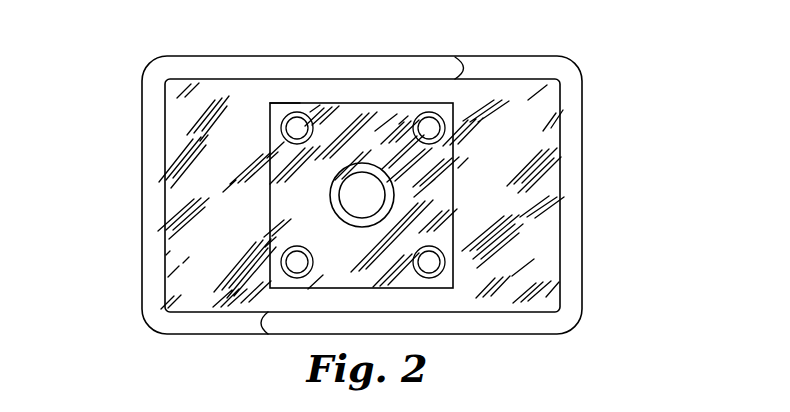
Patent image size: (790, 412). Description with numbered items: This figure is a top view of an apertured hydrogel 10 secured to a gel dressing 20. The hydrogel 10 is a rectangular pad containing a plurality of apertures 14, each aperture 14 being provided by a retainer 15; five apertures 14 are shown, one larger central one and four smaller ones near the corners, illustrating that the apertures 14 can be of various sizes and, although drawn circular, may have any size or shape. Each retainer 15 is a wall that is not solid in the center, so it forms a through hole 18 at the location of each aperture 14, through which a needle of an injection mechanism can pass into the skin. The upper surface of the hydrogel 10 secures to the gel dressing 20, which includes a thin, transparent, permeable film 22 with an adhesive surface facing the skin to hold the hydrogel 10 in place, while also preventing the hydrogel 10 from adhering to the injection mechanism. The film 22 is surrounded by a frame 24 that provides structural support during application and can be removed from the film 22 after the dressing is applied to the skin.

The apertured hydrogel 10 is at (268, 199).
The aperture 14 is at (299, 104).
The retainer 15 is at (315, 110).
The through hole 18 is at (285, 116).
The gel dressing 20 is at (592, 41).
The film 22 is at (173, 247).
The frame 24 is at (153, 305).